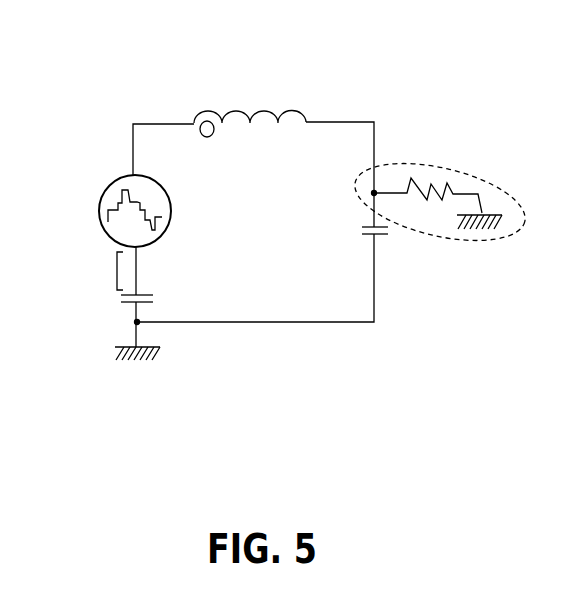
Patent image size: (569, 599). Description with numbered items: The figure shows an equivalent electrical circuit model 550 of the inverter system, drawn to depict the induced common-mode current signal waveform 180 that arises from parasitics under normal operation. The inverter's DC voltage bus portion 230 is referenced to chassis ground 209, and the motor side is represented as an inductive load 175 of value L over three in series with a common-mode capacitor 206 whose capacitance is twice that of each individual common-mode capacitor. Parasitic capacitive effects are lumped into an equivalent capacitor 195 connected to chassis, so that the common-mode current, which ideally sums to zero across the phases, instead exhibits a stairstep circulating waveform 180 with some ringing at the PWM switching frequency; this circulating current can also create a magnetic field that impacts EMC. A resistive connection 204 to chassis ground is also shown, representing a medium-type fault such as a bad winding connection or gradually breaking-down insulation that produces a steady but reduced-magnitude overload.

The equivalent electrical circuit model 550 is at (108, 66).
The inductive load 175 is at (267, 108).
The common-mode current signal waveform 180 is at (112, 192).
The DC voltage bus portion 230 is at (115, 272).
The common-mode capacitor 206 is at (119, 302).
The chassis ground 209 is at (117, 347).
The equivalent capacitor 195 is at (398, 232).
The resistive connection 204 is at (510, 238).